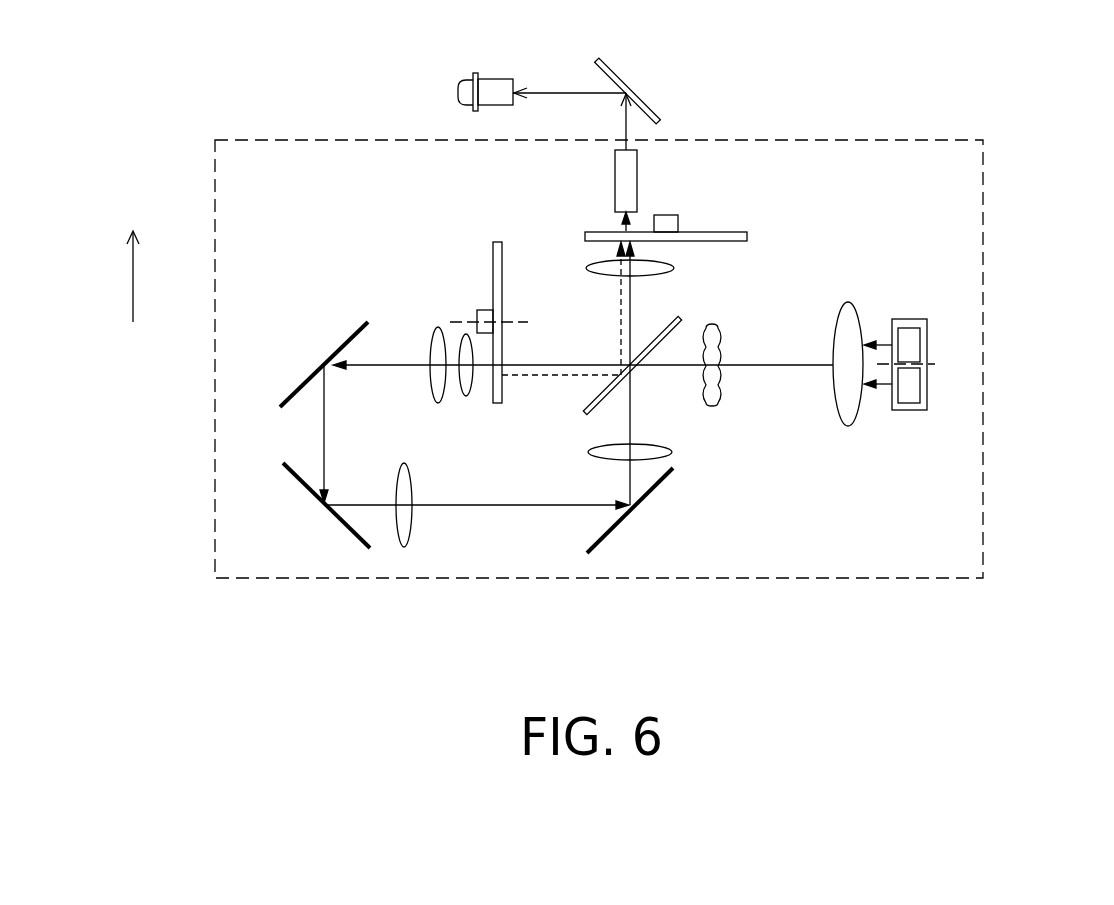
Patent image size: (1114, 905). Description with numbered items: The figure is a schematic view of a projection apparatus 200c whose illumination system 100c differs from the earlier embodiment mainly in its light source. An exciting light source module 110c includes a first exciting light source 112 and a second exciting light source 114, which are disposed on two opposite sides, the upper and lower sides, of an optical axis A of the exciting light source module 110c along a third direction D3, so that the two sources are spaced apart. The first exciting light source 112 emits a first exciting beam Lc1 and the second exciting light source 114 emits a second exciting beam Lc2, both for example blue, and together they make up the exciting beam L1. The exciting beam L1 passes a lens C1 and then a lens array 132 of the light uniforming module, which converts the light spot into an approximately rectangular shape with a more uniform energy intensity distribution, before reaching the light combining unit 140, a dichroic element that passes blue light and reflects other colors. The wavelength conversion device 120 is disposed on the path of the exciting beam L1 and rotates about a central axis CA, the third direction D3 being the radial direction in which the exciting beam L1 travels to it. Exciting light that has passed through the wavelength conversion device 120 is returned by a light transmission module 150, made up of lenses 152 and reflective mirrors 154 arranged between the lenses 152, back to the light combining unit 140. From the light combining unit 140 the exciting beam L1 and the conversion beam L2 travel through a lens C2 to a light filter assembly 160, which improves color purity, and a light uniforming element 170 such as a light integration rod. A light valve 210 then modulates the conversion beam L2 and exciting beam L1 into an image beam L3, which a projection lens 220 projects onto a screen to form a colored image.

The illumination system 100c is at (983, 218).
The projection apparatus 200c is at (1005, 654).
The exciting light source module 110c is at (959, 366).
The first exciting light source 112 is at (912, 343).
The second exciting light source 114 is at (917, 400).
The wavelength conversion device 120 is at (496, 405).
The lens array 132 is at (712, 403).
The light combining unit 140 is at (676, 320).
The light transmission module 150 is at (310, 320).
The lenses 152 is at (437, 375).
The reflective mirrors 154 is at (305, 378).
The light filter assembly 160 is at (747, 237).
The light uniforming element 170 is at (637, 178).
The light valve 210 is at (665, 117).
The projection lens 220 is at (465, 92).
The optical axis A is at (940, 365).
The lens C1 is at (847, 415).
The lens C2 is at (672, 268).
The central axis CA is at (462, 325).
The third direction D3 is at (133, 262).
The exciting beam L1 is at (770, 365).
The conversion beam L2 is at (621, 305).
The image beam L3 is at (568, 93).
The first exciting beam Lc1 is at (885, 340).
The second exciting beam Lc2 is at (878, 390).